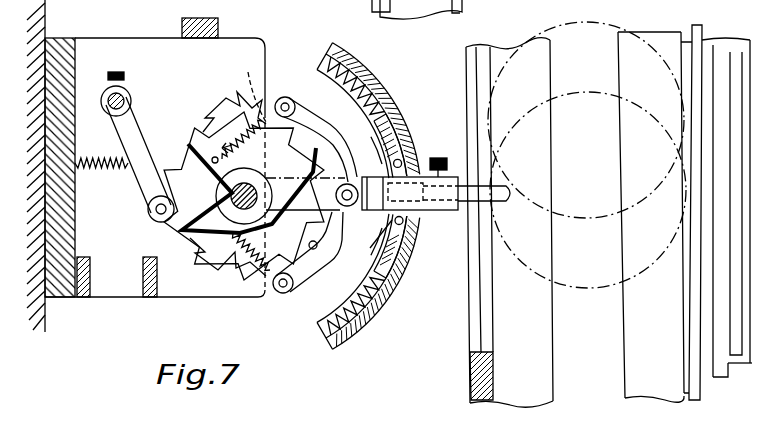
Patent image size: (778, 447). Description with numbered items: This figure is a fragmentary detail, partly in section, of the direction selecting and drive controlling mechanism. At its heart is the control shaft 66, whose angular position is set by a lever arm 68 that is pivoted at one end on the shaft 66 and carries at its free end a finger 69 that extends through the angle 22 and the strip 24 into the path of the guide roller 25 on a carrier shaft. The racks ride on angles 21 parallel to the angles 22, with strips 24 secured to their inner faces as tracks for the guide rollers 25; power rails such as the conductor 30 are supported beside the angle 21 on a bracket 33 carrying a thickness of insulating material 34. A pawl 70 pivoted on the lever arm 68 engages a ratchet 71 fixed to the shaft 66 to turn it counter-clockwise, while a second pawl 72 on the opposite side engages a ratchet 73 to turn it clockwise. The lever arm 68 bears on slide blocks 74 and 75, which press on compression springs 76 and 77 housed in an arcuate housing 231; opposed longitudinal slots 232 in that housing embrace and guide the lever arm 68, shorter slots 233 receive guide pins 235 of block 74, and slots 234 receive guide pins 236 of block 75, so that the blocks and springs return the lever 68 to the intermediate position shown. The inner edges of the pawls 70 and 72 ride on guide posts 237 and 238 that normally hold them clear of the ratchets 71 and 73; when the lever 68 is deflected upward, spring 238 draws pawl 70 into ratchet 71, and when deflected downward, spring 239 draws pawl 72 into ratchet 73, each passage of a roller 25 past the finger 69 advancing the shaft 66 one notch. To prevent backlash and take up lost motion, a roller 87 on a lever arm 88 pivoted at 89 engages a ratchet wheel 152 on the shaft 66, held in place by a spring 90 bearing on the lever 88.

The angle 21 is at (522, 402).
The angle 22 is at (472, 50).
The strip 24 is at (487, 63).
The guide roller 25 is at (583, 290).
The conductor or rail 30 is at (733, 50).
The bracket 33 is at (725, 378).
The insulating material 34 is at (748, 364).
The shaft 66 is at (192, 240).
The lever arm 68 is at (430, 170).
The finger 69 is at (510, 199).
The pawl 70 is at (291, 98).
The ratchet 71 is at (222, 112).
The pawl 72 is at (318, 277).
The ratchet 73 is at (221, 280).
The slide block 74 is at (399, 158).
The slide block 75 is at (404, 222).
The compression spring 76 is at (383, 100).
The compression spring 77 is at (380, 300).
The roller 87 is at (152, 218).
The lever arm 88 is at (137, 133).
The pivot 89 is at (125, 90).
The spring 90 is at (103, 174).
The ratchet wheel 152 is at (152, 143).
The arcuate housing 231 is at (350, 56).
The longitudinal slot 232 is at (368, 135).
The slot 233 is at (400, 128).
The slot 234 is at (400, 240).
The guide pin 235 is at (410, 142).
The guide pin 236 is at (392, 222).
The guide post 237 is at (261, 188).
The guide post / spring 238 is at (322, 276).
The spring 239 is at (254, 283).